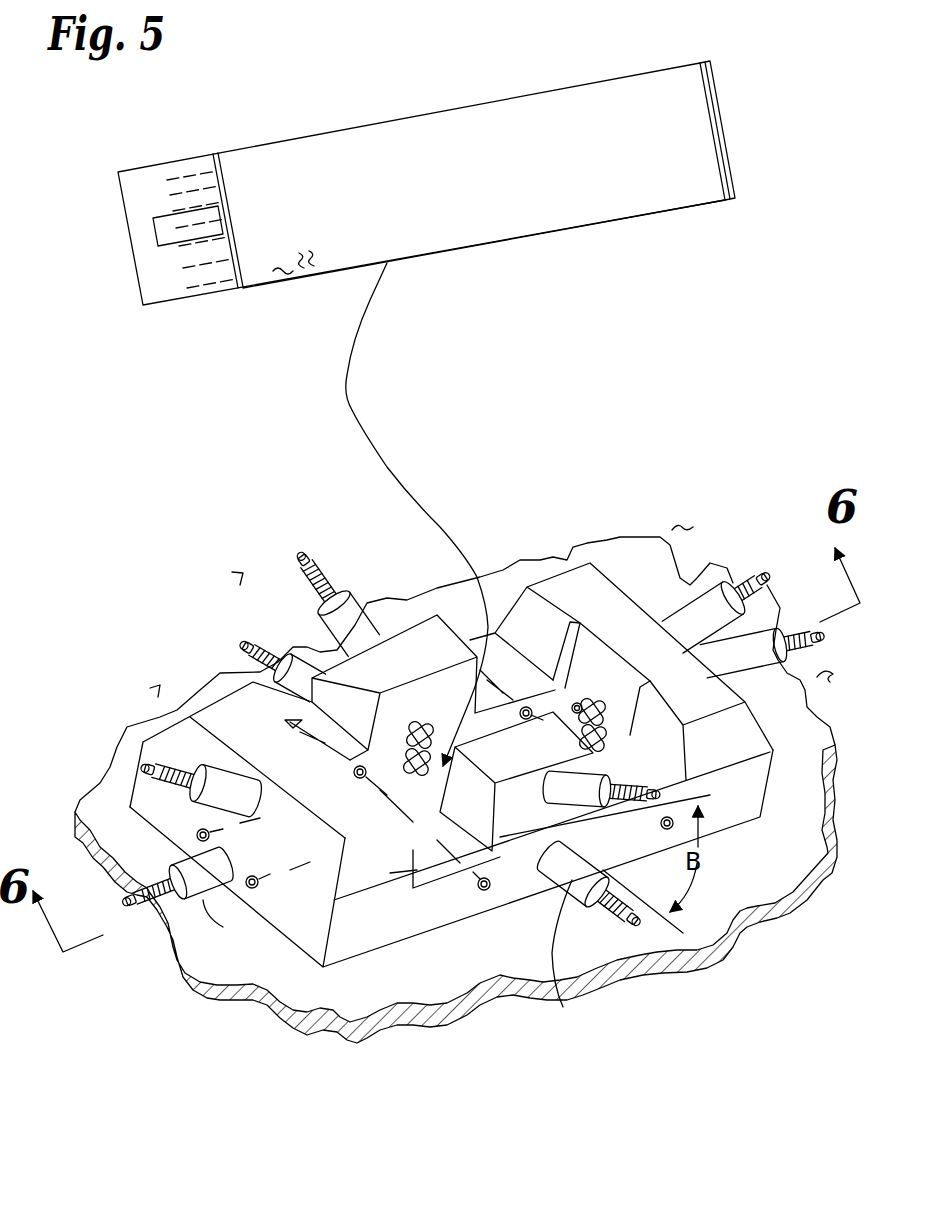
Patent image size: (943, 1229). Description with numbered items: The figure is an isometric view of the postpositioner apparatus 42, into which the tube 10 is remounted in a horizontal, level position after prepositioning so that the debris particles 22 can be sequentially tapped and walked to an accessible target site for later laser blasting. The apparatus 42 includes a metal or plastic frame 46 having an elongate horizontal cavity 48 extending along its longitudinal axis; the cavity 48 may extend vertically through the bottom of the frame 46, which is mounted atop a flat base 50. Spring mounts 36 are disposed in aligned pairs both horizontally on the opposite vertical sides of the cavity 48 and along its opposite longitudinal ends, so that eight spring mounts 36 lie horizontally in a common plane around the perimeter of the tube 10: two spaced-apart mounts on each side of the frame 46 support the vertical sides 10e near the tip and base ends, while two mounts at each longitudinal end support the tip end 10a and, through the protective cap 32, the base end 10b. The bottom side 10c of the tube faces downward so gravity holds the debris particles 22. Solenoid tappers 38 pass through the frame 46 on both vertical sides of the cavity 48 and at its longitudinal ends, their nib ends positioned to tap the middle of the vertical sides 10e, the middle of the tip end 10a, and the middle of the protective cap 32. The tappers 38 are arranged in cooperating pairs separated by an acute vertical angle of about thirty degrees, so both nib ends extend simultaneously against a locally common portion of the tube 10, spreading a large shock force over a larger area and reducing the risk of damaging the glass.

The tube 10 is at (360, 118).
The tip end 10a is at (728, 157).
The base end 10b is at (213, 154).
The bottom side 10c is at (537, 235).
The vertical sides 10e is at (373, 177).
The protective cap 32 is at (168, 161).
The debris particles 22 is at (287, 277).
The spring mounts 36 is at (298, 900).
The solenoid tappers 38 is at (362, 612).
The postpositioner apparatus 42 is at (612, 573).
The frame 46 is at (377, 933).
The cavity 48 is at (593, 640).
The base 50 is at (473, 976).